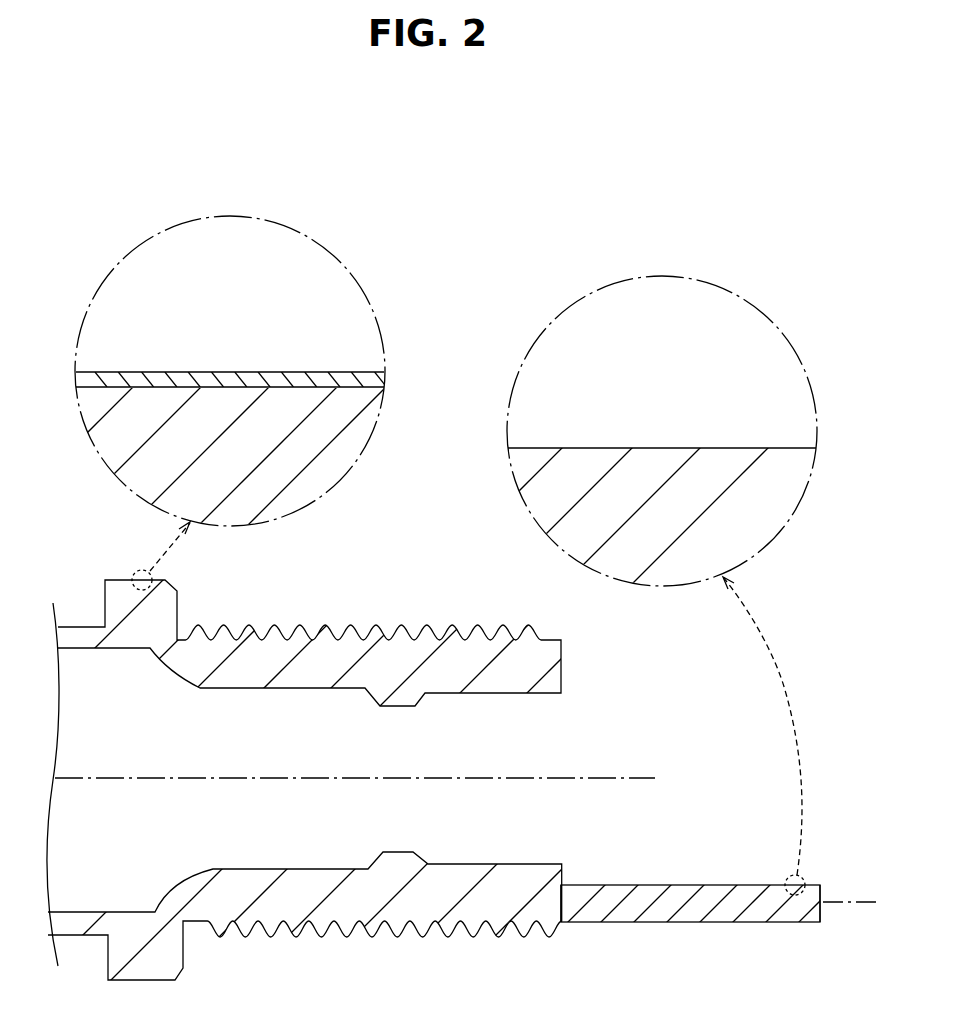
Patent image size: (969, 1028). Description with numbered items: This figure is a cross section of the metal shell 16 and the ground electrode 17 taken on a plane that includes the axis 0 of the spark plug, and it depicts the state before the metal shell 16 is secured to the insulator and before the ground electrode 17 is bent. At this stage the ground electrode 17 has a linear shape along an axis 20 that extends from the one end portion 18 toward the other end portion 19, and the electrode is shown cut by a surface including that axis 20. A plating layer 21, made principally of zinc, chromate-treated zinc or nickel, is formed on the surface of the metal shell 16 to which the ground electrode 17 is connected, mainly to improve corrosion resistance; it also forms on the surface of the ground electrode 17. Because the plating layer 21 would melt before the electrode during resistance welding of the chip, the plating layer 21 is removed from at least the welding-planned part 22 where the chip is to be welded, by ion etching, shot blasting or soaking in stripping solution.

The axis 0 is at (643, 778).
The metal shell 16 is at (353, 642).
The ground electrode 17 is at (705, 893).
The one end portion 18 is at (585, 914).
The other end portion 19 is at (809, 911).
The axis 20 is at (866, 900).
The plating layer 21 is at (225, 382).
The welding-planned part 22 is at (667, 447).